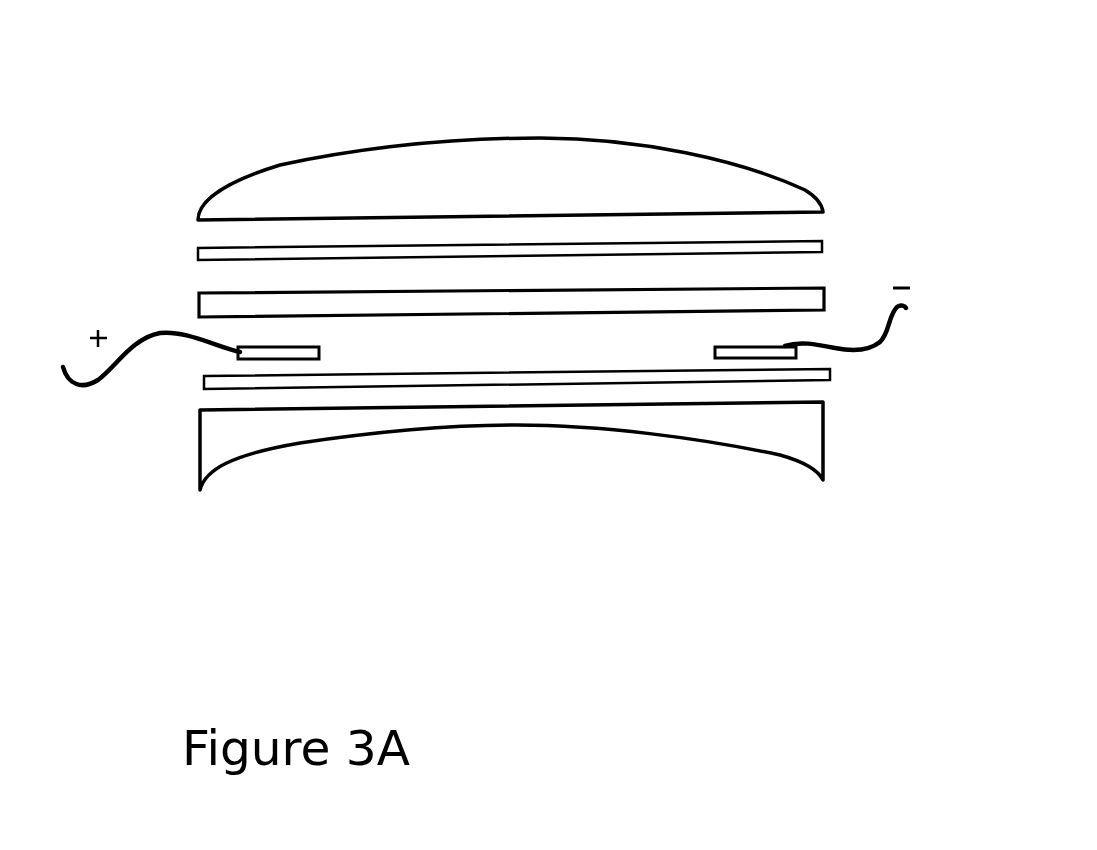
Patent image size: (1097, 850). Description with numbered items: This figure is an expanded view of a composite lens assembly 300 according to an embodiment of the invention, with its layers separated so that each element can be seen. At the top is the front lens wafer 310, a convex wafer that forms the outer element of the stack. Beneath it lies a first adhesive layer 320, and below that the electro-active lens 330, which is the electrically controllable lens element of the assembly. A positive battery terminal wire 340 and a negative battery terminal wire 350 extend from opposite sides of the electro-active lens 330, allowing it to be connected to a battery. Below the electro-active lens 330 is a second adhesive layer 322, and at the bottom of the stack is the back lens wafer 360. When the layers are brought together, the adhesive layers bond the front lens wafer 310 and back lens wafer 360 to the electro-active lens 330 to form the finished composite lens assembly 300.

The composite lens assembly 300 is at (865, 703).
The front lens wafer 310 is at (277, 198).
The first adhesive layer 320 is at (440, 247).
The second adhesive layer 322 is at (433, 377).
The electro-active lens 330 is at (722, 300).
The positive battery terminal wire 340 is at (117, 373).
The negative battery terminal wire 350 is at (862, 357).
The back lens wafer 360 is at (655, 420).